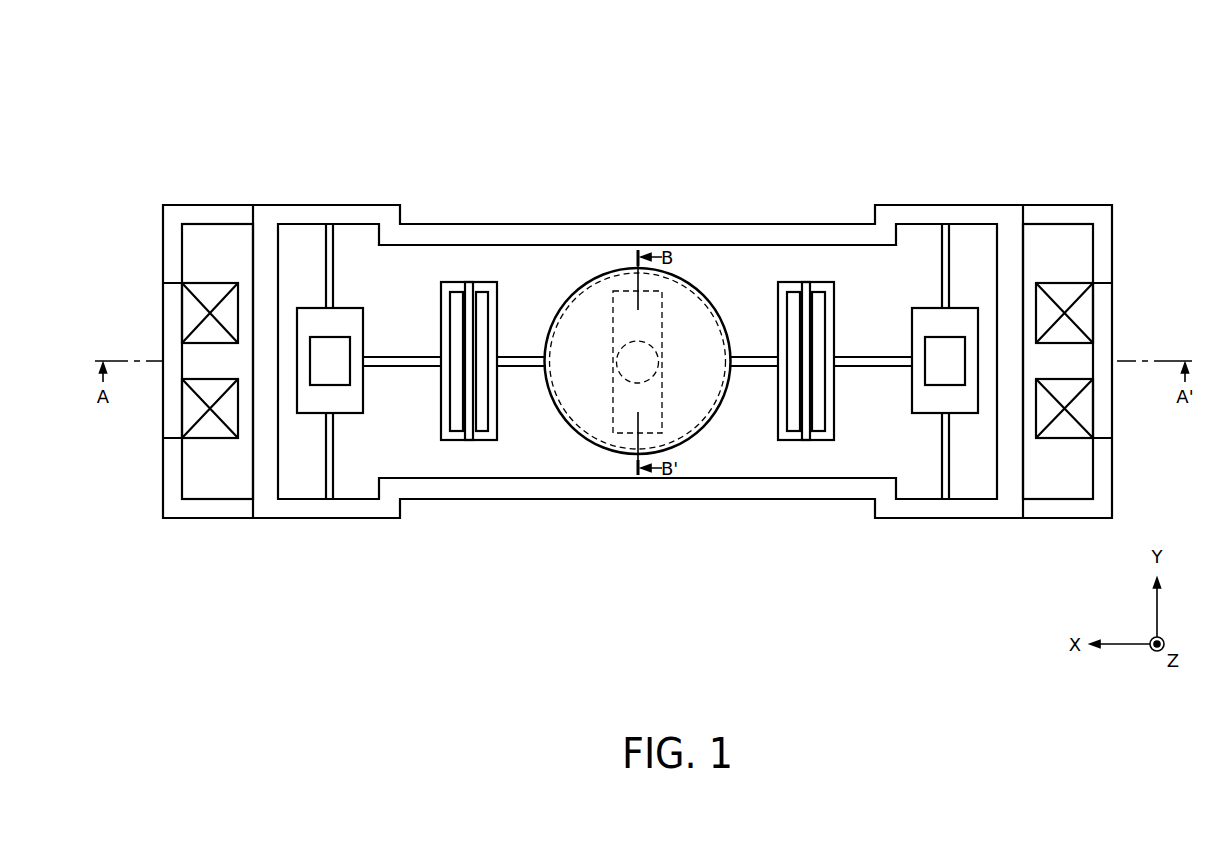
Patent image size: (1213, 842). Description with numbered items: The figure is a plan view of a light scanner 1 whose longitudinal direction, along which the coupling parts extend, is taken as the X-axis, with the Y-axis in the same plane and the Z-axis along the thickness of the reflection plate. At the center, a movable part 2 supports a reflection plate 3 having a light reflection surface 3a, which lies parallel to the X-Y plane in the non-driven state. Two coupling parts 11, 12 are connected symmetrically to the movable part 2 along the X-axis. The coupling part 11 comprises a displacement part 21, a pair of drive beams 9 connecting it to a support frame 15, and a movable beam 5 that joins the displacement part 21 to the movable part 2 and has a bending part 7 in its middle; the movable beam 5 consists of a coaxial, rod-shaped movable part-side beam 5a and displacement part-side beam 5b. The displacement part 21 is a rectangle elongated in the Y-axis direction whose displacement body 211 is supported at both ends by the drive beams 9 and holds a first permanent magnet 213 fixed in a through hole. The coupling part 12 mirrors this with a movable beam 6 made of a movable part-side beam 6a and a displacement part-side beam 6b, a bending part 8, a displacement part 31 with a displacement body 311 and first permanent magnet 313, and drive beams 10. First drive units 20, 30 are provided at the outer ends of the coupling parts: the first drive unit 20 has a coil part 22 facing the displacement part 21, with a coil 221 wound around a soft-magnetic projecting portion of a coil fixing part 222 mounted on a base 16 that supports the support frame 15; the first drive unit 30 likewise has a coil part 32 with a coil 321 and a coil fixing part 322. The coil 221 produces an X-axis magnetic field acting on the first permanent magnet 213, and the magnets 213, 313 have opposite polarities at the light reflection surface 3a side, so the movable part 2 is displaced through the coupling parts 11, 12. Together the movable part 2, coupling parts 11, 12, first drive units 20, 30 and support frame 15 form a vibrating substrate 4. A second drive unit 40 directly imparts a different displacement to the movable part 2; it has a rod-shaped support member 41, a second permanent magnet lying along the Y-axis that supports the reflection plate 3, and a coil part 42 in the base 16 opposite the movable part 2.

The light scanner 1 is at (980, 67).
The movable part 2 is at (638, 407).
The reflection plate 3 is at (683, 272).
The light reflection surface 3a is at (600, 297).
The vibrating substrate 4 is at (643, 100).
The movable beam 5 is at (472, 482).
The movable part-side beam 5a is at (522, 362).
The displacement part-side beam 5b is at (410, 362).
The movable beam 6 is at (801, 482).
The movable part-side beam 6a is at (747, 362).
The displacement part-side beam 6b is at (858, 362).
The bending part 7 is at (458, 273).
The bending part 8 is at (823, 274).
The drive beams 9 is at (391, 542).
The drive beams 10 is at (884, 542).
The coupling part 11 is at (530, 286).
The coupling part 12 is at (748, 283).
The support frame 15 is at (264, 510).
The base 16 is at (202, 510).
The first drive unit 20 is at (198, 116).
The displacement part 21 is at (297, 339).
The displacement body 211 is at (297, 323).
The first permanent magnet 213 is at (317, 387).
The coil part 22 is at (165, 273).
The coil 221 is at (208, 335).
The coil fixing part 222 is at (172, 337).
The first drive unit 30 is at (948, 116).
The displacement part 31 is at (974, 339).
The displacement body 311 is at (978, 323).
The first permanent magnet 313 is at (959, 387).
The coil part 32 is at (1108, 273).
The coil 321 is at (1067, 335).
The coil fixing part 322 is at (1105, 343).
The second drive unit 40 is at (621, 468).
The support member 41 is at (612, 388).
The coil part 42 is at (695, 428).